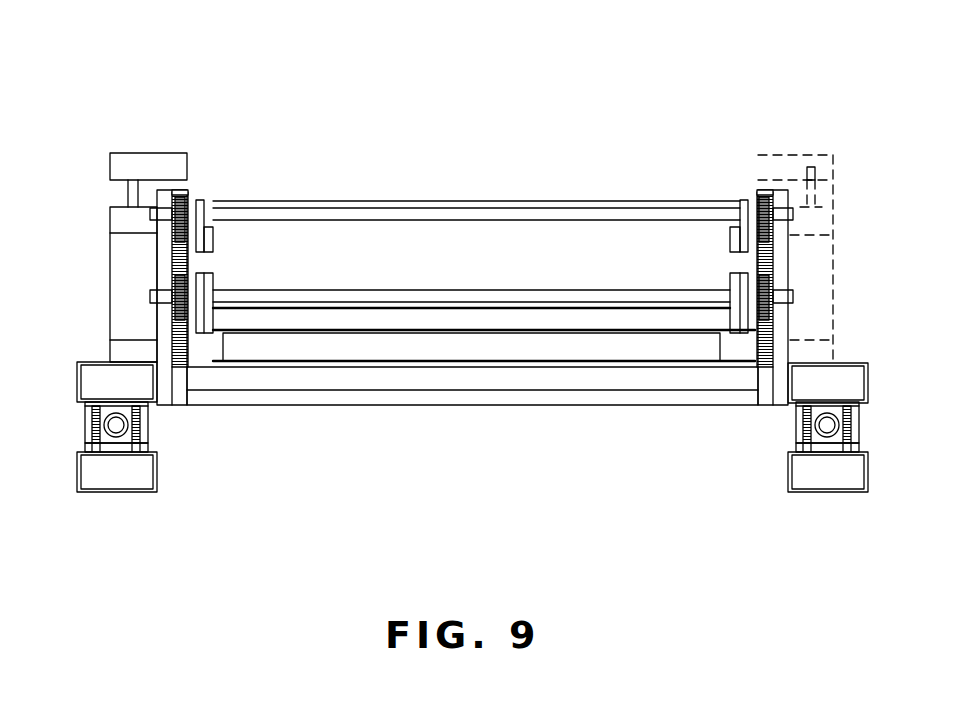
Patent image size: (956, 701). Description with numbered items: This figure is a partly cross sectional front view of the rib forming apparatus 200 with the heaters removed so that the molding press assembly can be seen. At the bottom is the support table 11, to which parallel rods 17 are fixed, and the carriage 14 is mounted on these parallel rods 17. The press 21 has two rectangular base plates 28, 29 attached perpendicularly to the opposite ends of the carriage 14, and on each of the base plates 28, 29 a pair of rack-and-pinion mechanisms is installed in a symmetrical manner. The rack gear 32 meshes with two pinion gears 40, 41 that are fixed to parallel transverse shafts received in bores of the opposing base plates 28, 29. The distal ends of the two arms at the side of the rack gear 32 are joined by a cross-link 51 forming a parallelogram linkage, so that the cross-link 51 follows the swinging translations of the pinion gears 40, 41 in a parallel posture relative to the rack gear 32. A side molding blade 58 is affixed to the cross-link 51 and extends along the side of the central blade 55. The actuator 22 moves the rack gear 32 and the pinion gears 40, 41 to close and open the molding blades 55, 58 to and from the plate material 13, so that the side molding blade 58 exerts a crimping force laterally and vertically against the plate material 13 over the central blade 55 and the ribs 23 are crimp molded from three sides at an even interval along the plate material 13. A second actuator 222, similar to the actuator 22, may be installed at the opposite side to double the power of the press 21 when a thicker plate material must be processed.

The rib forming apparatus 200 is at (472, 147).
The press 21 is at (250, 120).
The actuator 22 is at (118, 252).
The base plate 28 is at (155, 193).
The base plate 29 is at (780, 187).
The rack gear 32 is at (185, 187).
The pinion gear 40 is at (187, 193).
The cross-link 51 is at (212, 250).
The pinion gear 41 is at (193, 270).
The side molding blade 58 is at (452, 317).
The plate material 13 is at (555, 362).
The rib 23 is at (480, 352).
The central blade 55 is at (365, 400).
The carriage 14 is at (87, 362).
The parallel rod 17 is at (93, 418).
The support table 11 is at (110, 492).
The second actuator 222 is at (860, 340).